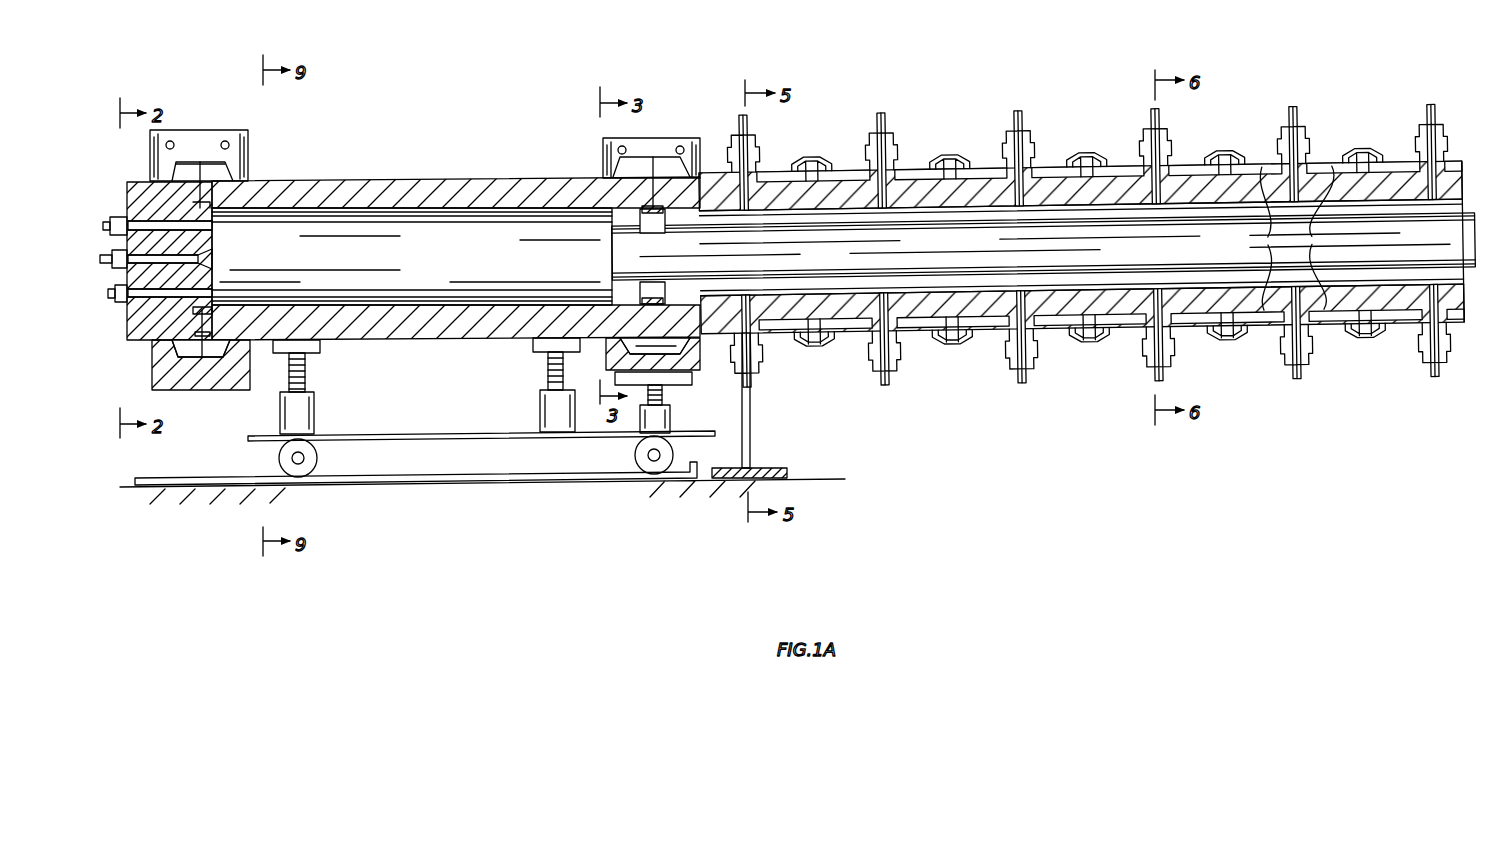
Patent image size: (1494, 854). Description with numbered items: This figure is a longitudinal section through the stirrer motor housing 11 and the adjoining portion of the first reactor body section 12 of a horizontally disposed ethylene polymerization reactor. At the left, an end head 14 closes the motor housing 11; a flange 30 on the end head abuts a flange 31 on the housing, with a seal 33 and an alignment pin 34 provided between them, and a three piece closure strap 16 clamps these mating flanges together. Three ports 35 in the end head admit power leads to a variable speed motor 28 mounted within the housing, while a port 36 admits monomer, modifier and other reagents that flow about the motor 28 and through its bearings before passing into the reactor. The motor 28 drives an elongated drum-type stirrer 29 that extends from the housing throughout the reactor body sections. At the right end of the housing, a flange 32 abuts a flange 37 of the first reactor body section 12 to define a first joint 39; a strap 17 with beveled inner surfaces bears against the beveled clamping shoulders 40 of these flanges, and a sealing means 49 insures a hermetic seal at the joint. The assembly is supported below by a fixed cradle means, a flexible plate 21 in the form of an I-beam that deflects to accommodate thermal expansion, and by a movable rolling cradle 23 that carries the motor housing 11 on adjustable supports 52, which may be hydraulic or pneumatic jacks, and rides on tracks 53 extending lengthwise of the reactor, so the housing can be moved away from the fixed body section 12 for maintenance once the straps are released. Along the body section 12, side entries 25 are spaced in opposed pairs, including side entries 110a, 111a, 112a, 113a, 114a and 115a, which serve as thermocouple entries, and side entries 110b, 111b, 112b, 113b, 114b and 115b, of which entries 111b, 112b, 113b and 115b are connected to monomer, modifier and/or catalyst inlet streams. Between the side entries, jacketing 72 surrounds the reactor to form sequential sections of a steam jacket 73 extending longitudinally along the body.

The stirrer motor housing 11 is at (452, 114).
The first reactor body section 12 is at (1096, 58).
The end head 14 is at (158, 217).
The strap 16 is at (248, 128).
The strap 17 is at (670, 133).
The flexible plate 21 is at (753, 420).
The rolling cradle 23 is at (395, 455).
The side entries 25 is at (1012, 124).
The variable speed motor 28 is at (409, 264).
The stirrer 29 is at (1030, 257).
The flange 30 is at (190, 200).
The flange 31 is at (219, 200).
The flange 32 is at (645, 200).
The seal 33 is at (214, 313).
The alignment pin 34 is at (196, 333).
The port 35 is at (212, 225).
The port 36 is at (214, 258).
The flange 37 is at (675, 200).
The first joint 39 is at (660, 310).
The clamping shoulders 40 is at (233, 174).
The sealing means 49 is at (667, 218).
The adjustable supports 52 is at (306, 371).
The tracks 53 is at (474, 490).
The jacketing 72 is at (768, 170).
The steam jacket 73 is at (1103, 360).
The side entry 110a is at (1434, 382).
The side entry 110b is at (1436, 128).
The side entry 111a is at (1300, 386).
The side entry 111b is at (1301, 126).
The side entry 112a is at (1162, 385).
The side entry 112b is at (1164, 128).
The side entry 113a is at (1024, 385).
The side entry 113b is at (1027, 128).
The side entry 114a is at (887, 385).
The side entry 114b is at (888, 128).
The side entry 115a is at (760, 368).
The side entry 115b is at (736, 127).